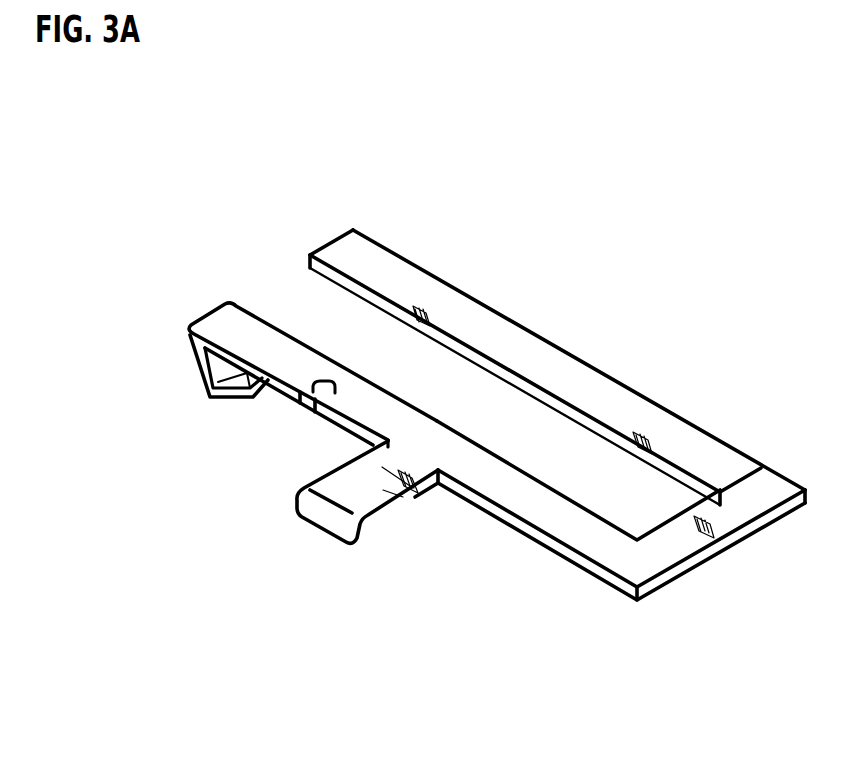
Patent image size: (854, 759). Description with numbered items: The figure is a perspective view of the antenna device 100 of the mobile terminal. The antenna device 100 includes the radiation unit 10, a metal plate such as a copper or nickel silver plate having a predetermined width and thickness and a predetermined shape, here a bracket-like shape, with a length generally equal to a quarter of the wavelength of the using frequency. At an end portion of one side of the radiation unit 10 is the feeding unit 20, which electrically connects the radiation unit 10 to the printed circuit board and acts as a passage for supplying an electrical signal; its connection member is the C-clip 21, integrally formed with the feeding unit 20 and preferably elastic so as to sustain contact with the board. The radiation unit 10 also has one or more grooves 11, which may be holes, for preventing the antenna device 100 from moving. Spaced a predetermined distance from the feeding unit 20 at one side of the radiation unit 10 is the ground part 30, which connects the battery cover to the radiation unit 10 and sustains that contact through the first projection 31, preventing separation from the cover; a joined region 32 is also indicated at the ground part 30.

The antenna device 100 is at (790, 226).
The radiation unit 10 is at (528, 498).
The groove 11 is at (312, 402).
The feeding unit 20 is at (215, 318).
The C-clip 21 is at (205, 363).
The ground part 30 is at (528, 597).
The first projection 31 is at (360, 523).
The welded portion 32 is at (410, 500).